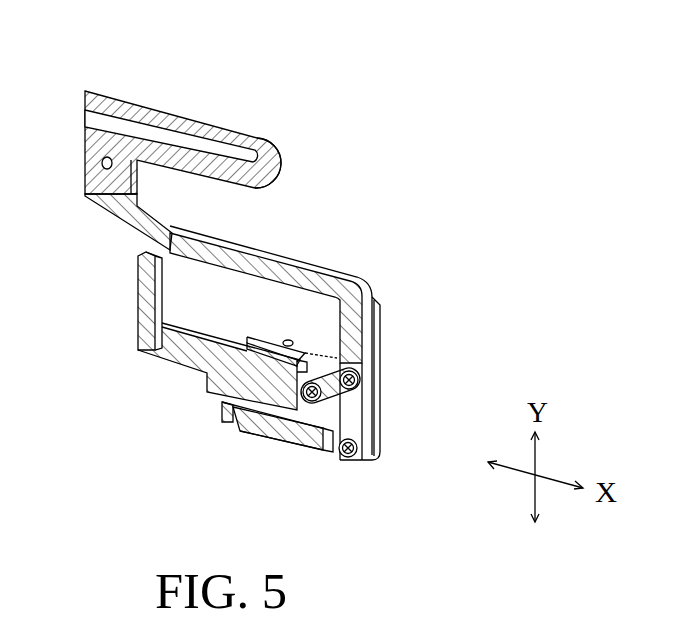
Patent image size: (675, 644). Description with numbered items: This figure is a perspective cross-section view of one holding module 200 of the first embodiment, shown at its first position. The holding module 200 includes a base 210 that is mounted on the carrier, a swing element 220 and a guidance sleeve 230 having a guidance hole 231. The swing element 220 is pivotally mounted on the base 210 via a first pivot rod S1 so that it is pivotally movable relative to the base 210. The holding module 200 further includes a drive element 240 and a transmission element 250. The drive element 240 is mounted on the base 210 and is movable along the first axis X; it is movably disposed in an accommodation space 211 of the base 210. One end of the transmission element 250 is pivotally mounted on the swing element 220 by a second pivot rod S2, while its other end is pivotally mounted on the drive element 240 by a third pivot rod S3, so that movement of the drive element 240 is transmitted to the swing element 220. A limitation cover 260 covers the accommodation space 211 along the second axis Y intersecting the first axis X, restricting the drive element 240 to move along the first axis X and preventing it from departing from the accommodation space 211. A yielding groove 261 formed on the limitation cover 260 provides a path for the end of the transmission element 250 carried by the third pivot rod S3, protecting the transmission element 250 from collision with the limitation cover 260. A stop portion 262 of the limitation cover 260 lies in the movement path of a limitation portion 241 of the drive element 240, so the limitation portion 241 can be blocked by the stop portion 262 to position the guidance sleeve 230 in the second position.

The holding module 200 is at (462, 130).
The base 210 is at (237, 428).
The accommodation space 211 is at (257, 438).
The swing element 220 is at (355, 323).
The guidance sleeve 230 is at (147, 110).
The guidance hole 231 is at (258, 160).
The drive element 240 is at (206, 352).
The limitation portion 241 is at (145, 282).
The transmission element 250 is at (352, 370).
The limitation cover 260 is at (299, 346).
The yielding groove 261 is at (319, 370).
The stop portion 262 is at (246, 340).
The first pivot rod S1 is at (347, 458).
The second pivot rod S2 is at (358, 382).
The third pivot rod S3 is at (313, 402).